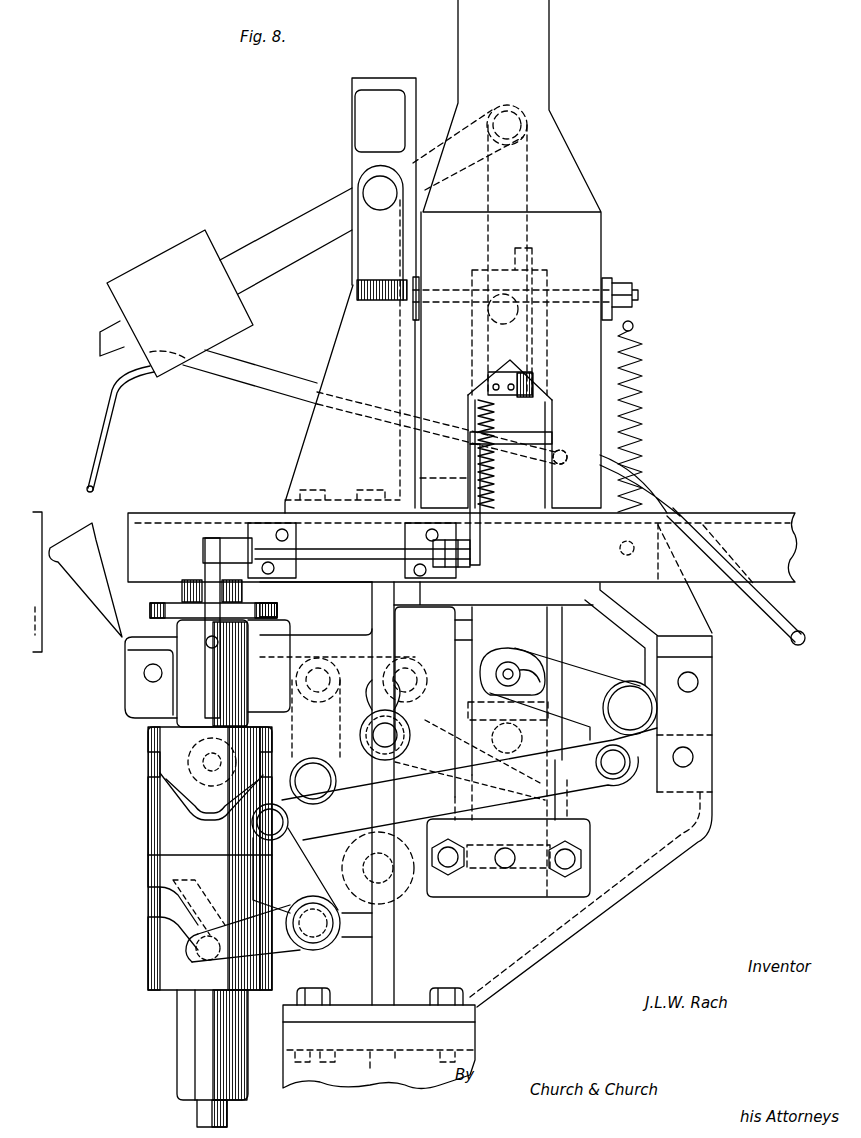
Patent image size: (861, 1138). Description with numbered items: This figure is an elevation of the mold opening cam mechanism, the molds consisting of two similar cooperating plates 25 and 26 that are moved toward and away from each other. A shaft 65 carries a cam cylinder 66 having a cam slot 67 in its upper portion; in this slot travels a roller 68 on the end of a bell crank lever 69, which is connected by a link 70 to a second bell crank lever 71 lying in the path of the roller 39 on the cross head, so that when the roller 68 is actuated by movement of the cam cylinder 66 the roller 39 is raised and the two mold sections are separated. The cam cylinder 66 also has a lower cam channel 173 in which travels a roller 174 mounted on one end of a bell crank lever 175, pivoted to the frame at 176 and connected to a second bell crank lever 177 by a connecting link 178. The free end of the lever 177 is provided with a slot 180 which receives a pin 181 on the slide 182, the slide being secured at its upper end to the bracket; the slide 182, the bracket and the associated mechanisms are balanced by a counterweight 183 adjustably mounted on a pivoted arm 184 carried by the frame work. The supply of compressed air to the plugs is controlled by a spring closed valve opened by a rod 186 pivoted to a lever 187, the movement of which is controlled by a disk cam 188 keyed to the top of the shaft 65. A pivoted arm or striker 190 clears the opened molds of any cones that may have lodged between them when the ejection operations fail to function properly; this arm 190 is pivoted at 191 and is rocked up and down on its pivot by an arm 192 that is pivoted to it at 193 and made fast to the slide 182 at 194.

The mold plate 25 is at (77, 575).
The mold plate 26 is at (135, 513).
The roller 39 is at (520, 748).
The shaft 65 is at (200, 1116).
The cam cylinder 66 is at (148, 857).
The cam slot 67 is at (152, 762).
The roller 68 is at (205, 752).
The bell crank lever 69 is at (282, 763).
The link 70 is at (358, 661).
The bell crank lever 71 is at (428, 735).
The cam channel 173 is at (150, 890).
The roller 174 is at (177, 1012).
The bell crank lever 175 is at (280, 953).
The pivot 176 is at (325, 936).
The bell crank lever 177 is at (578, 677).
The connecting link 178 is at (585, 785).
The slot 180 is at (533, 666).
The pin 181 is at (506, 664).
The slide 182 is at (473, 645).
The counterweight 183 is at (205, 243).
The pivoted arm 184 is at (299, 226).
The rod 186 is at (493, 528).
The lever 187 is at (478, 548).
The disk cam 188 is at (152, 605).
The pivoted arm or striker 190 is at (248, 380).
The pivot 191 is at (790, 645).
The arm 192 is at (558, 432).
The pivot 193 is at (565, 450).
The fastening point 194 is at (520, 428).